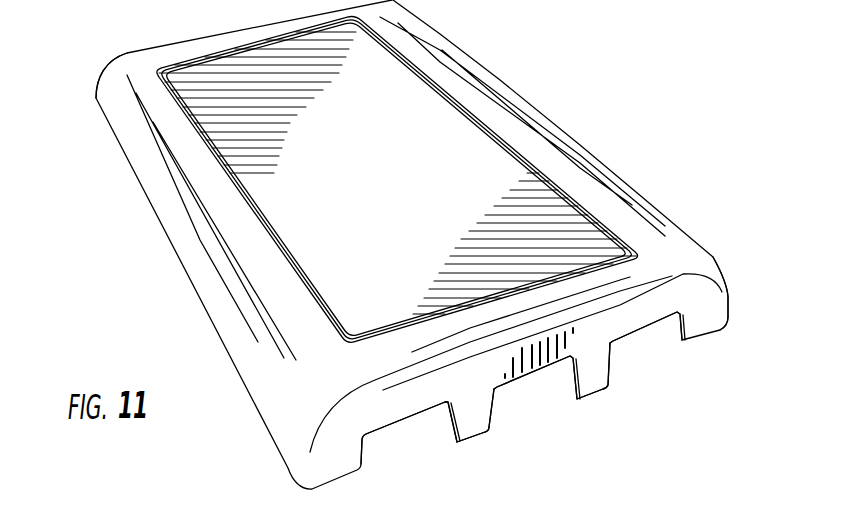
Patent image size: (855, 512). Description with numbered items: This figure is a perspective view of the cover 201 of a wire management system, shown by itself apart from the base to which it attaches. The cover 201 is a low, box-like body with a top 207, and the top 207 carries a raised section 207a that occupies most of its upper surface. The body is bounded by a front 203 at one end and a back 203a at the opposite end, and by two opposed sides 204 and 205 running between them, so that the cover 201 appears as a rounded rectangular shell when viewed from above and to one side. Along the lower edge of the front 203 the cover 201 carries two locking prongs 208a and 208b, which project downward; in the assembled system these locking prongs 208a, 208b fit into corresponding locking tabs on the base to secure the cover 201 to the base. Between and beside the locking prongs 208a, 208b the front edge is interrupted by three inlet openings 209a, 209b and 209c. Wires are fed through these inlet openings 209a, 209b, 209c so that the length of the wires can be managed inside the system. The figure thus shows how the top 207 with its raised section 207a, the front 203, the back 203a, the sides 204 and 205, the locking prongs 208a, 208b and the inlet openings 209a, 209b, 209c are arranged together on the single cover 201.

The cover 201 is at (584, 150).
The front 203 is at (715, 298).
The back 203a is at (97, 82).
The side 204 is at (188, 240).
The side 205 is at (642, 197).
The top 207 is at (465, 65).
The raised section 207a is at (490, 133).
The locking prong 208a is at (480, 422).
The locking prong 208b is at (598, 373).
The inlet opening 209a is at (400, 448).
The inlet opening 209b is at (543, 397).
The inlet opening 209c is at (658, 343).